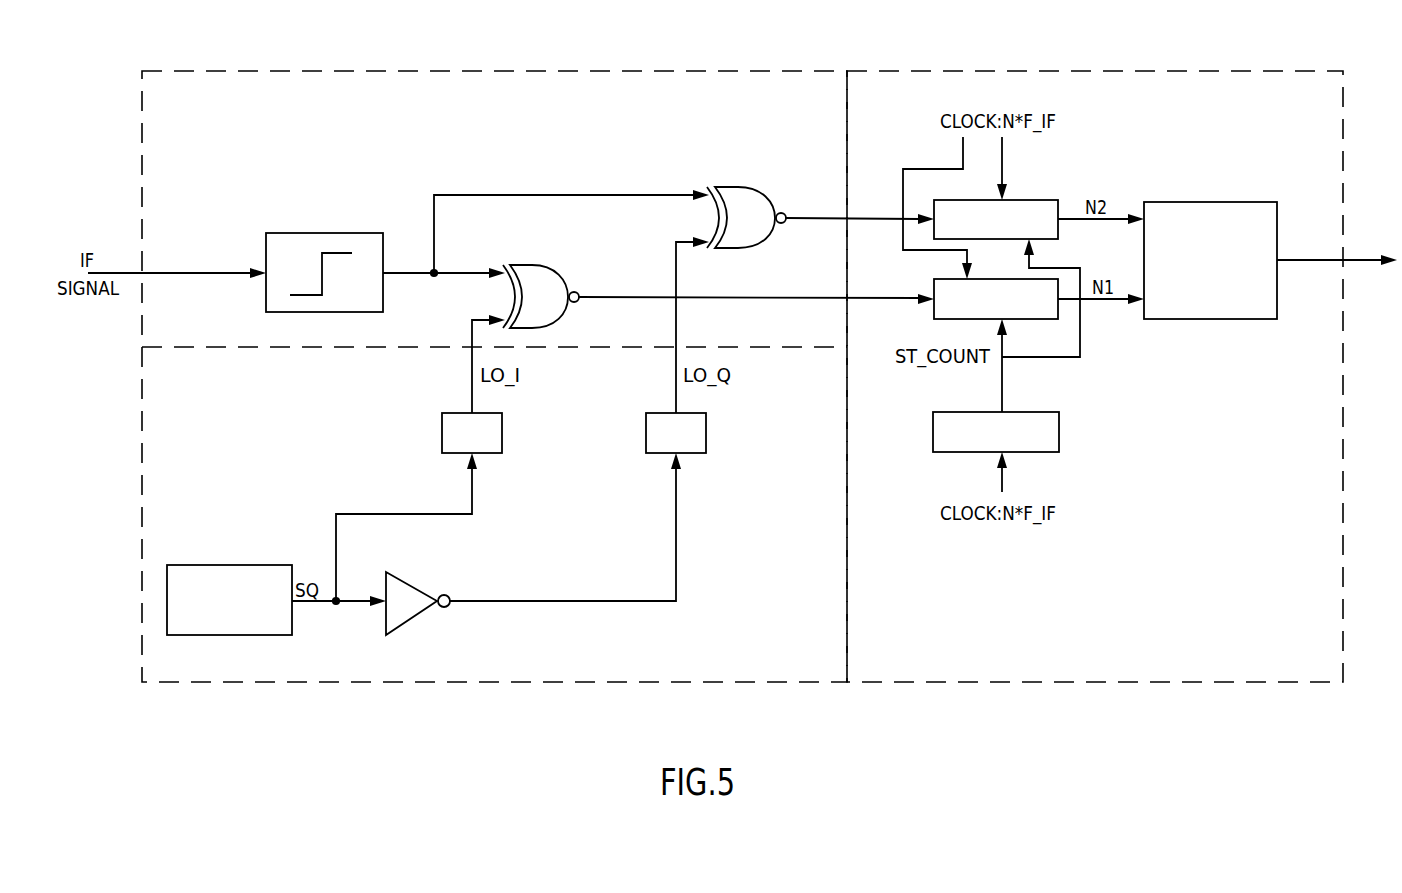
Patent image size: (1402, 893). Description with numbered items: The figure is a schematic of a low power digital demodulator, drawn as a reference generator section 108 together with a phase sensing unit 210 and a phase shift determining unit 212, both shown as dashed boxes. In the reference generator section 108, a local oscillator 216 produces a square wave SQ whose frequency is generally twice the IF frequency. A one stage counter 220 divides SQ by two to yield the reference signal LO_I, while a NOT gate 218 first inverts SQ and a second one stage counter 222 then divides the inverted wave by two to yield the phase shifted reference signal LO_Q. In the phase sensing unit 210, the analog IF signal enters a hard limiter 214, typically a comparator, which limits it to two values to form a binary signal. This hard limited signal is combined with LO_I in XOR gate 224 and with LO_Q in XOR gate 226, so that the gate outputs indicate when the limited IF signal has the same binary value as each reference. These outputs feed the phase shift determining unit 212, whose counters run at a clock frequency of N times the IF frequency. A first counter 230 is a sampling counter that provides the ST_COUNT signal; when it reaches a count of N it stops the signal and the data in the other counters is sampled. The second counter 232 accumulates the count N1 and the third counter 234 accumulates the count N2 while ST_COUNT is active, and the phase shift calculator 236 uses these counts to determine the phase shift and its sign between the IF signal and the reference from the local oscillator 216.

The local oscillator section 108 is at (167, 433).
The phase sensing unit 210 is at (593, 80).
The phase shift determining unit 212 is at (1195, 83).
The hard limiter 214 is at (303, 232).
The local oscillator 216 is at (206, 565).
The NOT gate 218 is at (408, 582).
The one stage counter 220 is at (503, 437).
The one stage counter 222 is at (707, 433).
The XOR gate 224 is at (550, 275).
The XOR gate 226 is at (738, 187).
The first counter 230 is at (1035, 411).
The second counter 232 is at (948, 278).
The third counter 234 is at (1038, 198).
The phase shift calculator 236 is at (1253, 200).